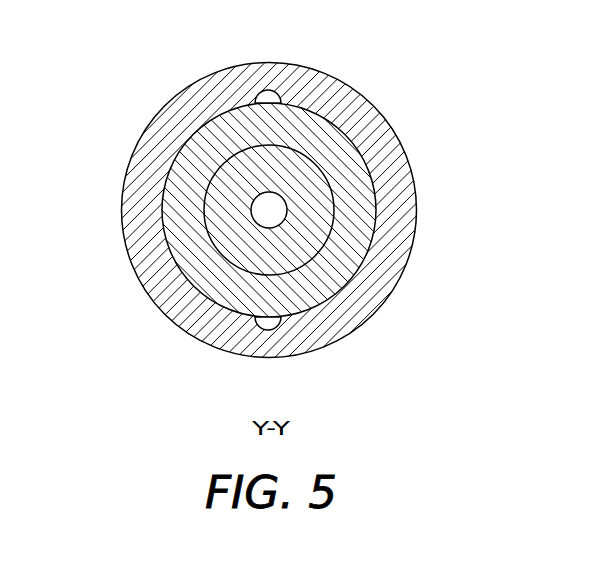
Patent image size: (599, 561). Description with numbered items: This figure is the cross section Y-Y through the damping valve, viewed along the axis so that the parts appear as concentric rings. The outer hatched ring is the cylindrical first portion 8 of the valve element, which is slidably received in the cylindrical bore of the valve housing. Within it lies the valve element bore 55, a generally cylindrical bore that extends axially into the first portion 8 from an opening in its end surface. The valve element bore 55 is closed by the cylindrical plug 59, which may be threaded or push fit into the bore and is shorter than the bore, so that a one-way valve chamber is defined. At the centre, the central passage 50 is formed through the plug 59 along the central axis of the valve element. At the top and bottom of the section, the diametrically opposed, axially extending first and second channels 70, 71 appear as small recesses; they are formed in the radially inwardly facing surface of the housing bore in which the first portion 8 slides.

The first portion 8 is at (330, 137).
The central passage 50 is at (257, 218).
The valve element bore 55 is at (213, 183).
The plug 59 is at (315, 223).
The first channel 70 is at (264, 327).
The second channel 71 is at (265, 90).